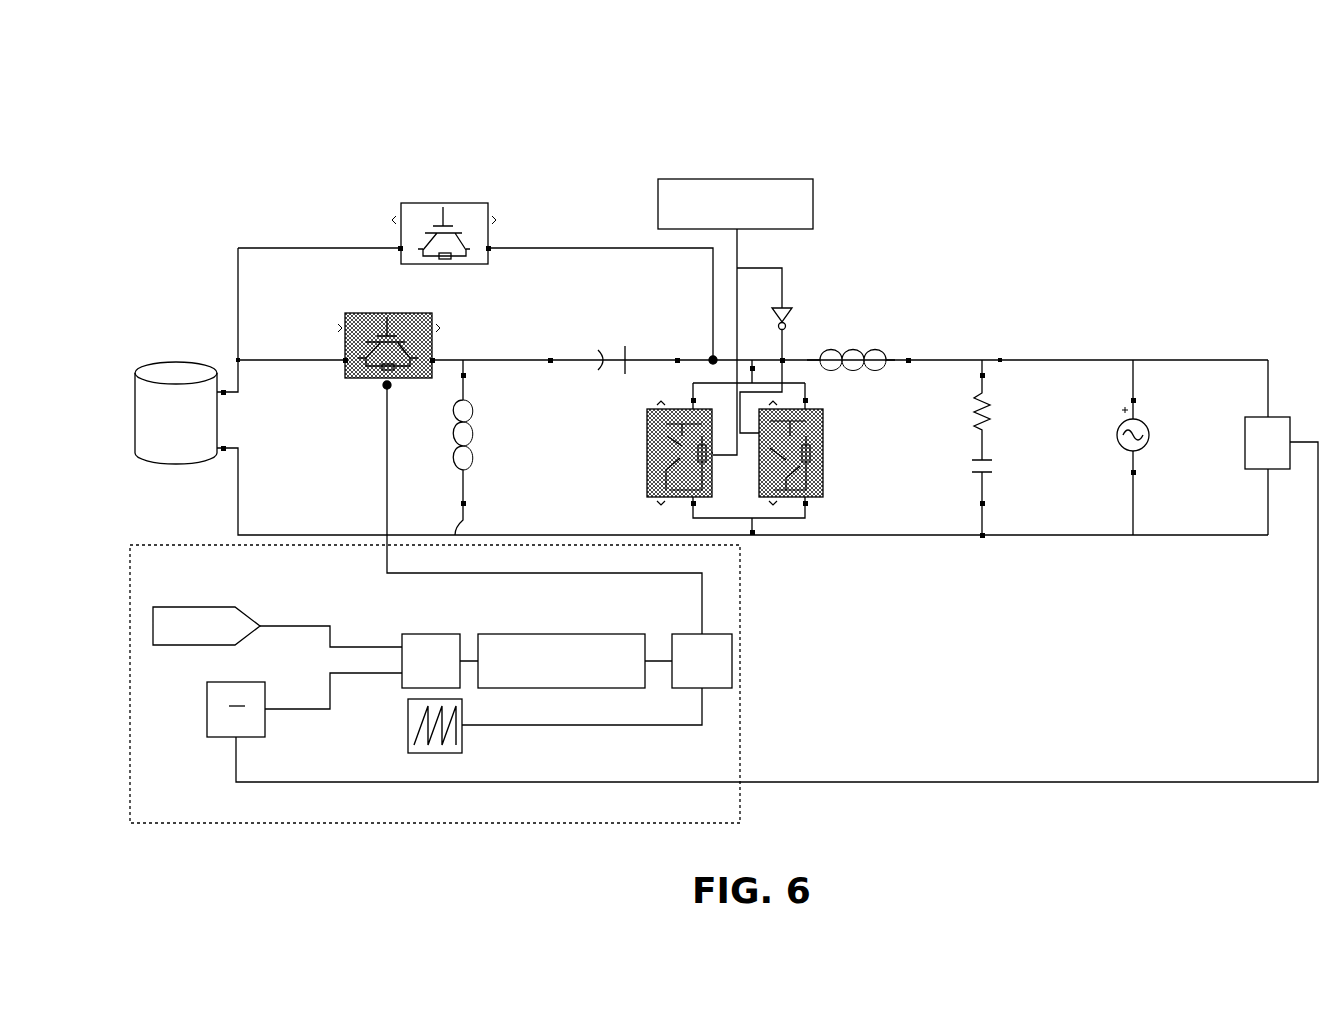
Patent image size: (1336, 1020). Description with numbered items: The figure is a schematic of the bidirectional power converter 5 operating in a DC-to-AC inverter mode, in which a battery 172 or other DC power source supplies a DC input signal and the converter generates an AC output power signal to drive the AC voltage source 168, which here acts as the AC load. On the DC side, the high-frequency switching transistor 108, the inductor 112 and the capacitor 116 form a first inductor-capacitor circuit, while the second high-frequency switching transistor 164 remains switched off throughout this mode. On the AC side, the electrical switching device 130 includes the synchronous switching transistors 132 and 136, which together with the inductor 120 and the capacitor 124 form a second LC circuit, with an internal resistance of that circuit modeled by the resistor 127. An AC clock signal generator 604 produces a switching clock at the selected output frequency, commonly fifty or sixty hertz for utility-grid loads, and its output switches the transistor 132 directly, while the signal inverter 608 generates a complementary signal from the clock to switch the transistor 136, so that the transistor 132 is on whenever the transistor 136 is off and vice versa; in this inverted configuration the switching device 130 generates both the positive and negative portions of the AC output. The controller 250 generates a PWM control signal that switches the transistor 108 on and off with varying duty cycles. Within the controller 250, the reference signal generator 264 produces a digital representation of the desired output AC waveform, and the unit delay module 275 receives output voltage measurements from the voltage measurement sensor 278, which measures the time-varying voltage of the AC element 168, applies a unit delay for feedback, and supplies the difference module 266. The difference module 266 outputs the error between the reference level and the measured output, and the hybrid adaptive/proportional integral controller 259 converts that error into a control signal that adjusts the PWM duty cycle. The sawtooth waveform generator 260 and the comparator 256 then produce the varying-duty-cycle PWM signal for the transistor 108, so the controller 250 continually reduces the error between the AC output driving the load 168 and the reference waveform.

The bidirectional power converter 5 is at (112, 82).
The high-frequency switching transistor 108 is at (418, 313).
The inductor 112 is at (470, 458).
The capacitor 116 is at (628, 350).
The inductor 120 is at (850, 353).
The capacitor 124 is at (974, 474).
The resistor 127 is at (990, 416).
The electrical switching device 130 is at (710, 447).
The synchronous switching transistor 132 is at (648, 481).
The synchronous switching transistor 136 is at (823, 440).
The second high-frequency switching transistor 164 is at (470, 203).
The AC voltage source 168 is at (1138, 452).
The battery 172 is at (150, 369).
The controller 250 is at (435, 704).
The comparator 256 is at (696, 634).
The hybrid adaptive/proportional integral (PI) controller 259 is at (546, 634).
The sawtooth waveform generator 260 is at (462, 742).
The reference signal generator 264 is at (178, 607).
The difference module 266 is at (412, 634).
The unit delay module 275 is at (207, 709).
The voltage measurement sensor 278 is at (1270, 418).
The AC clock signal generator 604 is at (707, 179).
The signal inverter (NOT-gate) 608 is at (786, 308).